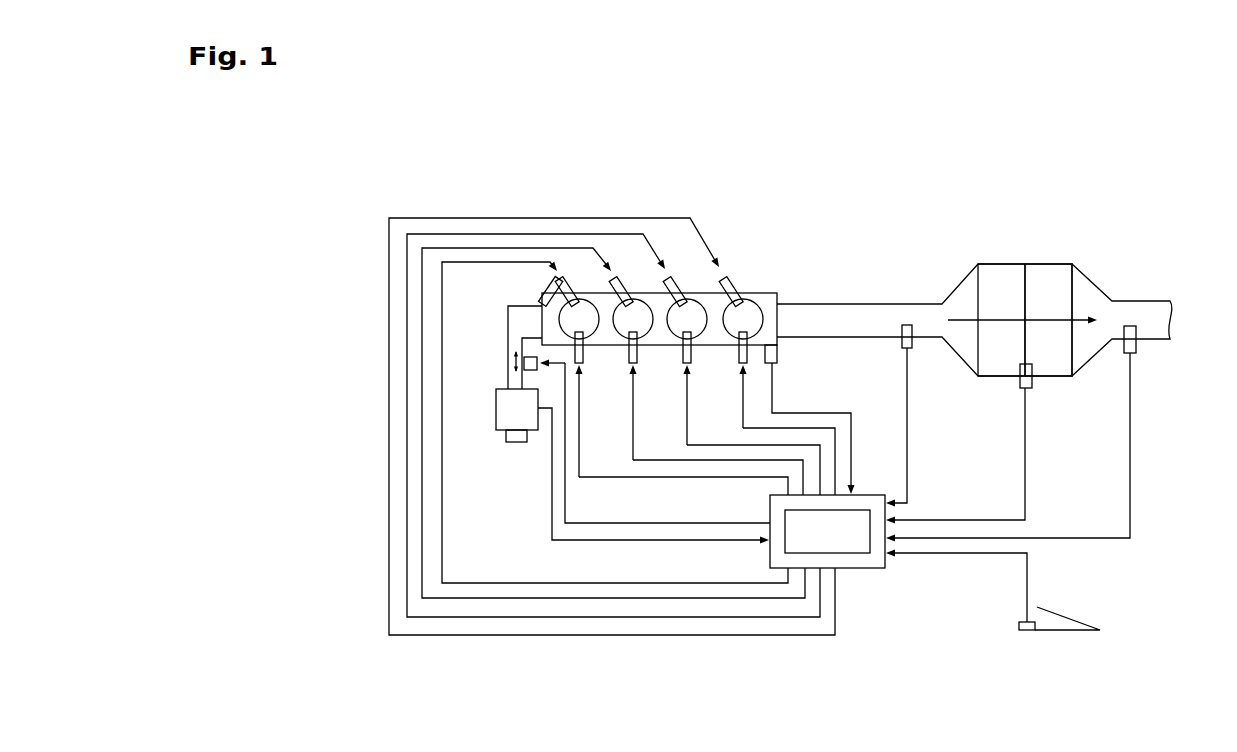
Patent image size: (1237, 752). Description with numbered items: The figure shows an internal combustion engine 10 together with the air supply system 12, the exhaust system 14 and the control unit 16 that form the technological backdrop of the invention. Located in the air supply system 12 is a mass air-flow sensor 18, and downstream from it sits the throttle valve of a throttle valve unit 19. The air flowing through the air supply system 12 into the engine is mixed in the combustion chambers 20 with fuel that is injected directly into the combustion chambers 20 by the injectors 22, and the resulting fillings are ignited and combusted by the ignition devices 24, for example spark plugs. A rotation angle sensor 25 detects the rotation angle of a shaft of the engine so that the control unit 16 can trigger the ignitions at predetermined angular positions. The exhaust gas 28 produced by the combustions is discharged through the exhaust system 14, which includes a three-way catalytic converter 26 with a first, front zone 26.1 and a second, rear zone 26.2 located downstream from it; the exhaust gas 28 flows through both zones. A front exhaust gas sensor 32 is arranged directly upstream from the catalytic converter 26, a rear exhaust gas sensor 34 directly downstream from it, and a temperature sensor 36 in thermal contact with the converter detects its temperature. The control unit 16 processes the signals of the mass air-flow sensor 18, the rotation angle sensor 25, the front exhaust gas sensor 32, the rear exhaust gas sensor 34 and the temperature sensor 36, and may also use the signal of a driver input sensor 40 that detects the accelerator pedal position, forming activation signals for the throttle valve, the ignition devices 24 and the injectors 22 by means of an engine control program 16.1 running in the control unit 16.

The internal combustion engine 10 is at (828, 179).
The air supply system 12 is at (513, 458).
The exhaust system 14 is at (1192, 410).
The control unit 16 is at (883, 568).
The engine control program 16.1 is at (852, 555).
The mass air-flow sensor 18 is at (496, 410).
The throttle valve unit 19 is at (507, 347).
The combustion chambers 20 is at (760, 296).
The injectors 22 is at (735, 350).
The ignition devices 24 is at (732, 278).
The rotation angle sensor 25 is at (778, 352).
The catalytic converter 26 is at (962, 385).
The first zone 26.1 is at (997, 273).
The second zone 26.2 is at (1058, 270).
The exhaust gas 28 is at (1047, 320).
The front exhaust gas sensor 32 is at (902, 342).
The rear exhaust gas sensor 34 is at (1138, 345).
The temperature sensor 36 is at (1032, 378).
The driver input sensor 40 is at (1027, 632).